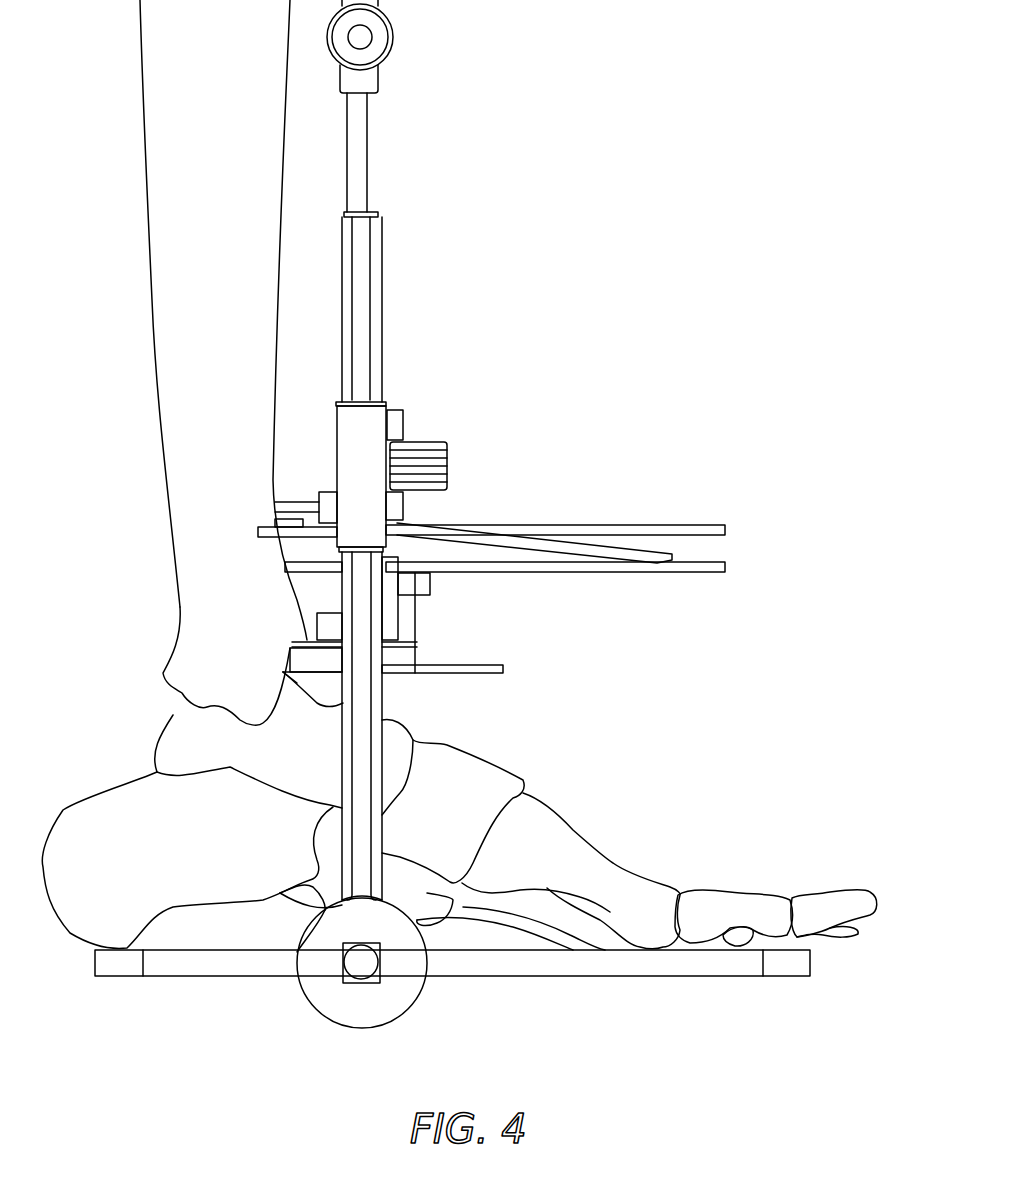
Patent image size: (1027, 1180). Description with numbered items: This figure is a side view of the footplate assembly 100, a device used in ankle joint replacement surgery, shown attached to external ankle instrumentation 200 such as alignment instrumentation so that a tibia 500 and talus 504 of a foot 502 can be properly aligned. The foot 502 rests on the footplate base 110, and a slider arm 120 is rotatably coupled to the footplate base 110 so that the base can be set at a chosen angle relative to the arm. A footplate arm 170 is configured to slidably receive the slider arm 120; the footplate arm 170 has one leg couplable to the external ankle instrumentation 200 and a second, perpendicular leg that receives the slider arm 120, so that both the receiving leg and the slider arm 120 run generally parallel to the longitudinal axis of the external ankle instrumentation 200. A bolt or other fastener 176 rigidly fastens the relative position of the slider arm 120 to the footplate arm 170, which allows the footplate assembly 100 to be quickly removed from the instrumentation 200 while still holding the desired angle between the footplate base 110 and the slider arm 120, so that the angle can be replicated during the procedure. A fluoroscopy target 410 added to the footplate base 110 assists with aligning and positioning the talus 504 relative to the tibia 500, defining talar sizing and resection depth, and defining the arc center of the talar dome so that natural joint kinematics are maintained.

The footplate assembly 100 is at (706, 716).
The footplate base 110 is at (551, 960).
The slider arm 120 is at (384, 704).
The footplate arm 170 is at (398, 527).
The fastener 176 is at (404, 505).
The external ankle instrumentation 200 is at (420, 440).
The fluoroscopy target 410 is at (355, 967).
The tibia 500 is at (162, 249).
The foot 502 is at (597, 843).
The talus 504 is at (178, 690).